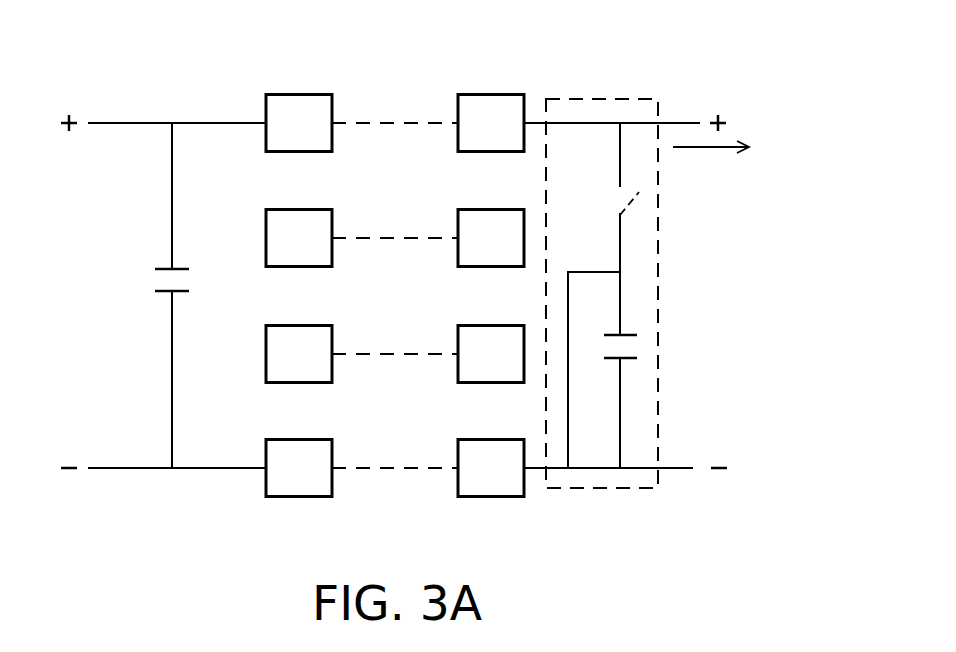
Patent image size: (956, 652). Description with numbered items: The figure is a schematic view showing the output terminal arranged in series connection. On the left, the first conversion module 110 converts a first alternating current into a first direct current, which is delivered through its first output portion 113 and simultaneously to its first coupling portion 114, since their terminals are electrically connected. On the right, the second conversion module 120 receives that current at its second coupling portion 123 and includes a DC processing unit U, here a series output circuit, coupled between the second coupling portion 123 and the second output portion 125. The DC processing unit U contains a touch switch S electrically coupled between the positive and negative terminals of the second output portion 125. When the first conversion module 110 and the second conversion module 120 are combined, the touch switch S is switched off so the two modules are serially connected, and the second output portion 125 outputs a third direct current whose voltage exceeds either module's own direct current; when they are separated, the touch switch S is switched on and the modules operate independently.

The first conversion module 110 is at (182, 499).
The first output portion 113 is at (106, 122).
The first coupling portion 114 is at (282, 378).
The second coupling portion 123 is at (473, 378).
The second conversion module 120 is at (679, 331).
The second output portion 125 is at (684, 122).
The touch switch S is at (640, 193).
The DC processing unit U is at (612, 490).